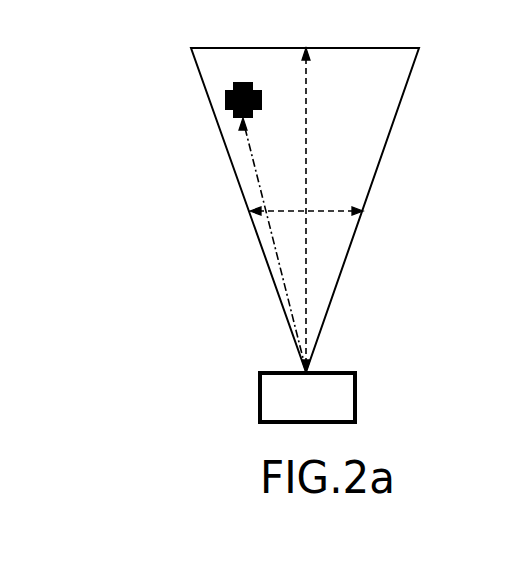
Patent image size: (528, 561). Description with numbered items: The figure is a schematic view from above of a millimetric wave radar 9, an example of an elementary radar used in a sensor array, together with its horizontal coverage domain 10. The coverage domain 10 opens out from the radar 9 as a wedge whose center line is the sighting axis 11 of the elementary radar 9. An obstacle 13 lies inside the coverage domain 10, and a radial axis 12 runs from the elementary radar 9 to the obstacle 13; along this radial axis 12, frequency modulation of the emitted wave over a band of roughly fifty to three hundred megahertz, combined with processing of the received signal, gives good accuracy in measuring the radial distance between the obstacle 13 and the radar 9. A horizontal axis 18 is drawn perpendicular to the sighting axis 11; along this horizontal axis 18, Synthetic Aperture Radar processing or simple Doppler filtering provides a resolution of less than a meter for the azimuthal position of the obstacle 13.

The millimetric wave radar 9 is at (355, 398).
The horizontal coverage domain 10 is at (382, 158).
The sighting axis 11 is at (306, 48).
The radial axis 12 is at (258, 175).
The obstacle 13 is at (225, 100).
The horizontal axis 18 is at (365, 211).